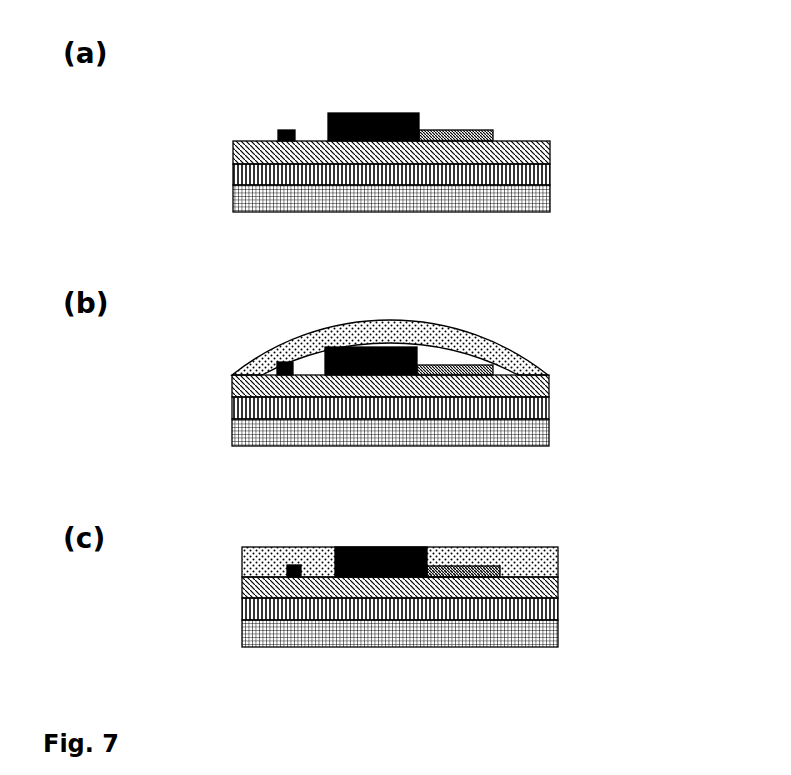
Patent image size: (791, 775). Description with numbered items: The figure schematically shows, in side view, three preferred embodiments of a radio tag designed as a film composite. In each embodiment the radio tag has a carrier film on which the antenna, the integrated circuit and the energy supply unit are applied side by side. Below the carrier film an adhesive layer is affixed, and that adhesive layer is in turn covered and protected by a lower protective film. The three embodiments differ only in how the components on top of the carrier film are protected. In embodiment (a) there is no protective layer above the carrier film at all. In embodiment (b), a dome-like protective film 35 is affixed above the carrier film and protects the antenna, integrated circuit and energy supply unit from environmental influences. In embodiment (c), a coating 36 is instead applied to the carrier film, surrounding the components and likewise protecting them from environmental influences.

The protective film 35 is at (527, 341).
The coating 36 is at (572, 550).